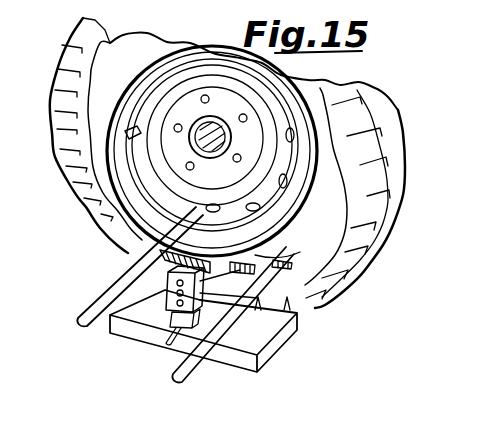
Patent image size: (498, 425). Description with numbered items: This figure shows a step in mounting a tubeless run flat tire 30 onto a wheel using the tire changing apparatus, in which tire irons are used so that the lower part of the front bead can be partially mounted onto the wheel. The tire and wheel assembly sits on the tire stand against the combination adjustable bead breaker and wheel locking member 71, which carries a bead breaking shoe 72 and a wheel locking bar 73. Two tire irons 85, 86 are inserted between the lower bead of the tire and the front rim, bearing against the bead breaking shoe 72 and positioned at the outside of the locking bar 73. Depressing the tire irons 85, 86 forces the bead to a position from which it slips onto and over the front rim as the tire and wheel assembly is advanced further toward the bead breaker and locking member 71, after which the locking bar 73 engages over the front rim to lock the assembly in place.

The tubeless run flat tire 30 is at (389, 134).
The combination adjustable bead breaker and wheel locking member 71 is at (161, 297).
The bead breaking shoe 72 is at (283, 258).
The wheel locking bar 73 is at (160, 253).
The tire iron 85 is at (106, 298).
The tire iron 86 is at (228, 329).